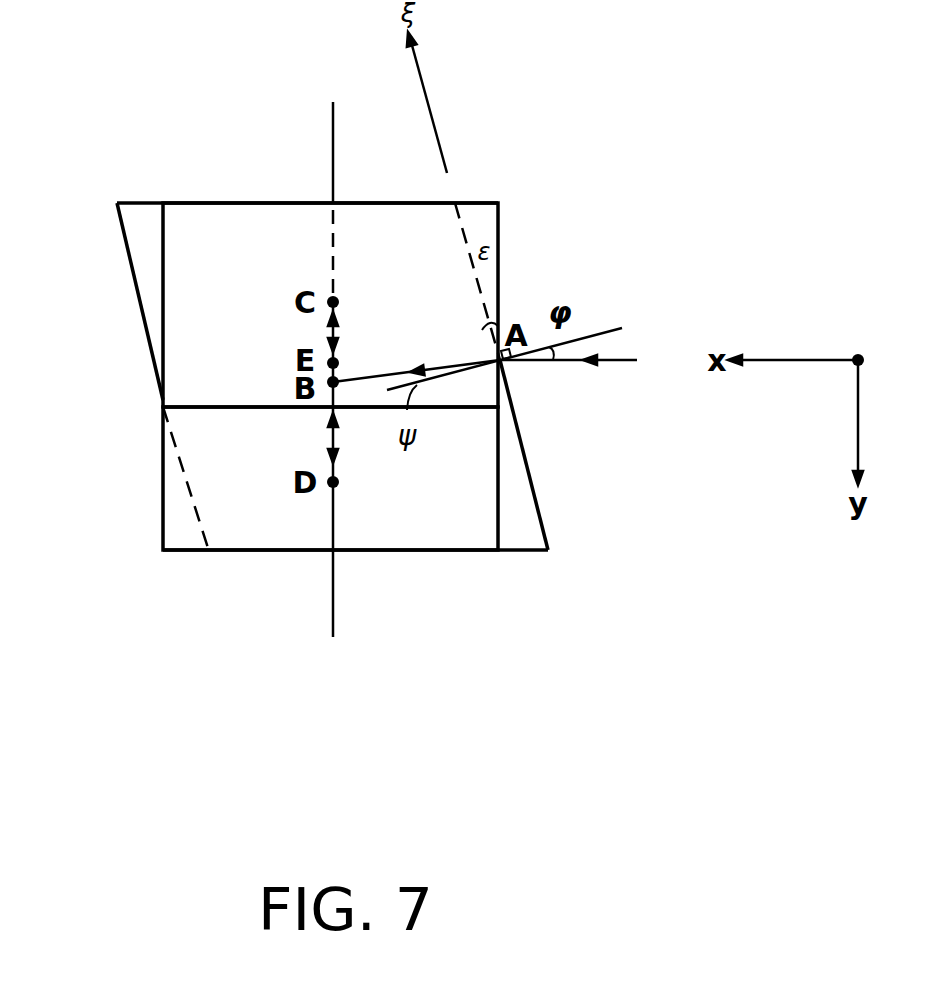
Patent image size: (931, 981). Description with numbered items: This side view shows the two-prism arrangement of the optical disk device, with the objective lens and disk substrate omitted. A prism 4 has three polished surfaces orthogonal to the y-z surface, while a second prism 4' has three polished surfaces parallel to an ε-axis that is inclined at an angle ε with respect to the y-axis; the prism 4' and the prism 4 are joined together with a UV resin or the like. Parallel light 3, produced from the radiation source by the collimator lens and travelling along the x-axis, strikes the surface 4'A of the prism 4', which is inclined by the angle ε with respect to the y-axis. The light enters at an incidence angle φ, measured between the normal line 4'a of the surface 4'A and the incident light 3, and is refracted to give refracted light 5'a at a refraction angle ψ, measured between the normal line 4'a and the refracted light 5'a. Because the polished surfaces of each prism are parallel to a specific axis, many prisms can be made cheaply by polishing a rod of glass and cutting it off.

The parallel light 3 is at (630, 365).
The prism 4 is at (278, 481).
The prism 4' is at (301, 376).
The surface 4'A is at (579, 455).
The normal line 4'a is at (529, 313).
The refracted light 5'a is at (416, 330).